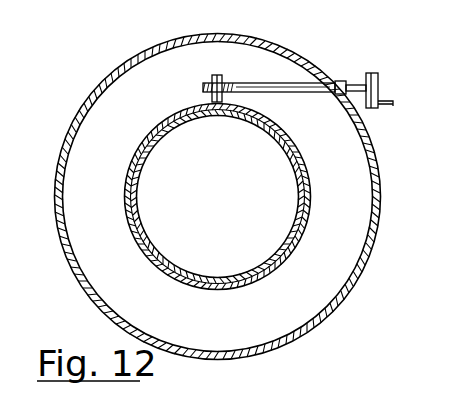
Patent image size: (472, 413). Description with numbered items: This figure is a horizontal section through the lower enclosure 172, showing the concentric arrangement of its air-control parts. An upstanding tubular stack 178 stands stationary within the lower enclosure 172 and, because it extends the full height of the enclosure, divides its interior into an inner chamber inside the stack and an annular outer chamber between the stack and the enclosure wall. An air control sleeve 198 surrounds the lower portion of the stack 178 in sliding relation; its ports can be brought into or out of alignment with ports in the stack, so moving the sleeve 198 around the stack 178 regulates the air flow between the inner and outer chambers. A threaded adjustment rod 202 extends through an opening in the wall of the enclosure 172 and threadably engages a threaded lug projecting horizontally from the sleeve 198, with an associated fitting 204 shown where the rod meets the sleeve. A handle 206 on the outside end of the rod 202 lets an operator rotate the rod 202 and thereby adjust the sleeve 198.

The lower enclosure 172 is at (157, 47).
The air control sleeve 198 is at (163, 119).
The stack 178 is at (158, 140).
The threaded adjustment rod 202 is at (212, 82).
The threaded rod 204 is at (218, 76).
The handle 206 is at (409, 50).